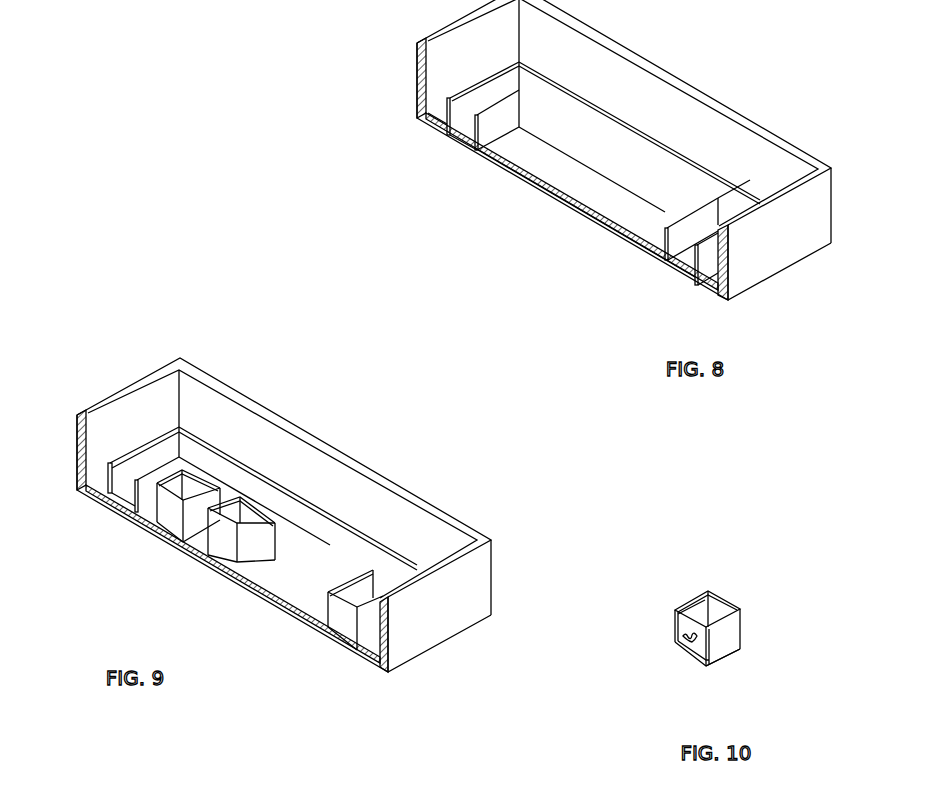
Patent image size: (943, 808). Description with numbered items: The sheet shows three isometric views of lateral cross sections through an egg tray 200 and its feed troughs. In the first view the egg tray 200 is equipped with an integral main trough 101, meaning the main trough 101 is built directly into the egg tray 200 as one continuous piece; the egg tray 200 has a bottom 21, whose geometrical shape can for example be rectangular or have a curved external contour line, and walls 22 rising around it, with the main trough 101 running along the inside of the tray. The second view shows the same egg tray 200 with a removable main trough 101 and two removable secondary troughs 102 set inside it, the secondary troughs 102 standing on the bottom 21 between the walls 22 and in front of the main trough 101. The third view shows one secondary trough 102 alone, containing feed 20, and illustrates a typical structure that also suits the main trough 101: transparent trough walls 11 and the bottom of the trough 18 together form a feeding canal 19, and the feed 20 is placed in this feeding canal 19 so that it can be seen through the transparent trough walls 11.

In FIG. 8, the egg tray 200 is at (376, 190).
In FIG. 9, the egg tray 200 is at (208, 378).
In FIG. 8, the walls 22 is at (458, 52).
In FIG. 8, the bottom 21 is at (600, 205).
In FIG. 8, the main trough 101 is at (560, 82).
In FIG. 9, the main trough 101 is at (392, 568).
In FIG. 9, the secondary trough 102 is at (207, 507).
In FIG. 10, the secondary trough 102 is at (712, 568).
In FIG. 10, the feeding canal 19 is at (694, 615).
In FIG. 10, the feed 20 is at (688, 638).
In FIG. 10, the transparent trough walls 11 is at (722, 641).
In FIG. 10, the bottom of the trough 18 is at (690, 655).